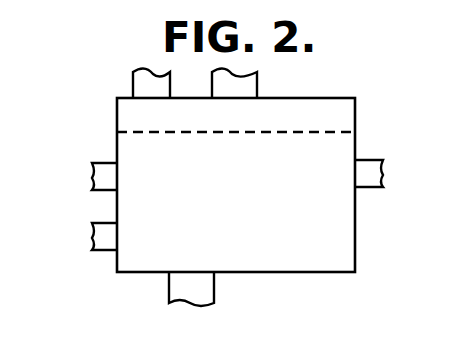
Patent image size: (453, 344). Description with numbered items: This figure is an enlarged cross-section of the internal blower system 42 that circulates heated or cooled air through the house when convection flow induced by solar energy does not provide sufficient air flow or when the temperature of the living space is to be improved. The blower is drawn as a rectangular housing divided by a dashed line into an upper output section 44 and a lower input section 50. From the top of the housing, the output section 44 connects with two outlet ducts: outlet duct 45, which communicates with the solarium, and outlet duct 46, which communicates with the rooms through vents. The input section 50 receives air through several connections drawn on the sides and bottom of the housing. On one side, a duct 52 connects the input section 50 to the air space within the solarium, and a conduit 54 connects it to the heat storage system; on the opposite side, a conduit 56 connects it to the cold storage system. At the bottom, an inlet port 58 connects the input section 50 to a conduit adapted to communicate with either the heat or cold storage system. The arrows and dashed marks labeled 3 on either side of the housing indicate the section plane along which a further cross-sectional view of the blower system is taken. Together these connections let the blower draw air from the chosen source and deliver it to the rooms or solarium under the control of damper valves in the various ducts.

The section line 3- 3 is at (80, 158).
The internal blower system 42 is at (357, 236).
The output section 44 is at (289, 126).
The outlet duct 45 is at (137, 83).
The outlet duct 46 is at (258, 82).
The input section 50 is at (237, 216).
The duct 52 is at (96, 238).
The conduit 54 is at (106, 162).
The conduit 56 is at (370, 185).
The inlet port 58 is at (172, 283).